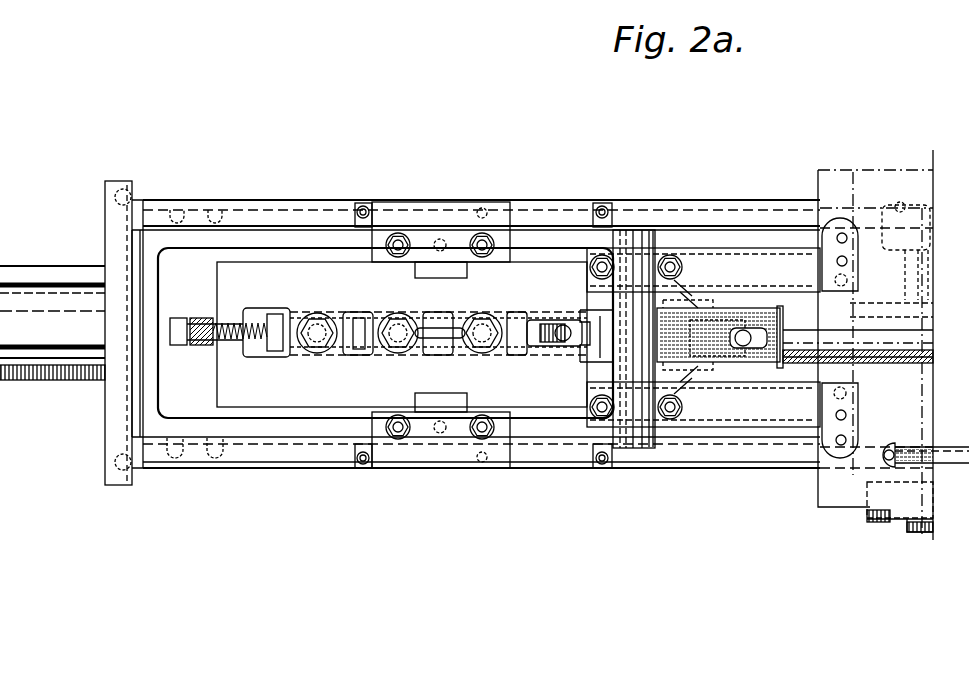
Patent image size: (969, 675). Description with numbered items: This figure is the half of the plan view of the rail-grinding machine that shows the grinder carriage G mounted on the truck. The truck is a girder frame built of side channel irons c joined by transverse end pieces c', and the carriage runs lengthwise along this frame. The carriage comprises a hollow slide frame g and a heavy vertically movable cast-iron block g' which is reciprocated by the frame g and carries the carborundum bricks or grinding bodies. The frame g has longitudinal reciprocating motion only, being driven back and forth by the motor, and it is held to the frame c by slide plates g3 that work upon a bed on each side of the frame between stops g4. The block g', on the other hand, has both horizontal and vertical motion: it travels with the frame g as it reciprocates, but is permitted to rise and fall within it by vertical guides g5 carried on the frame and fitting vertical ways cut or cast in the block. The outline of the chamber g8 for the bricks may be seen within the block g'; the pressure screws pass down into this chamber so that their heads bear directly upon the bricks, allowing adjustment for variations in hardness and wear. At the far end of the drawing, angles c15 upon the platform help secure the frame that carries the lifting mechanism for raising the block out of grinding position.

The grinder carriage G is at (484, 330).
The side channel irons c is at (556, 345).
The transverse end pieces c' is at (104, 333).
The angles c15 is at (861, 272).
The hollow slide frame g is at (476, 370).
The cast-iron block g' is at (551, 345).
The slide plates g3 is at (425, 205).
The stops g4 is at (363, 205).
The vertical guides g5 is at (415, 267).
The chamber for the bricks g8 is at (314, 312).